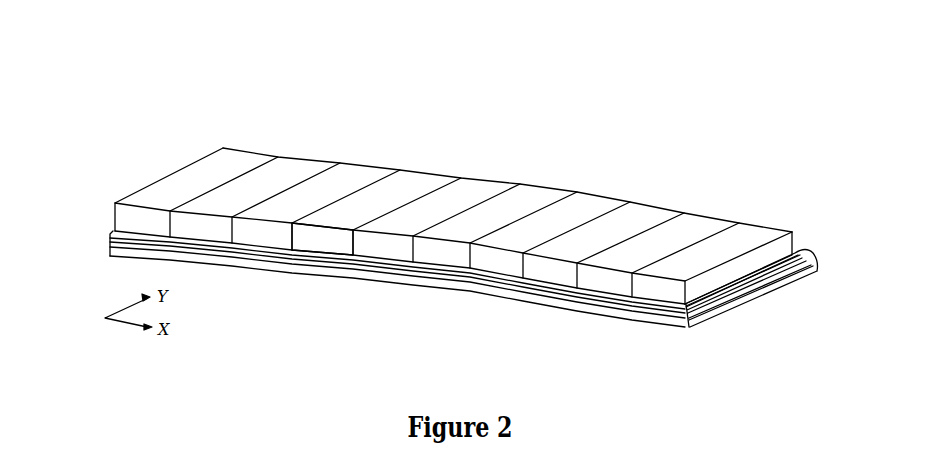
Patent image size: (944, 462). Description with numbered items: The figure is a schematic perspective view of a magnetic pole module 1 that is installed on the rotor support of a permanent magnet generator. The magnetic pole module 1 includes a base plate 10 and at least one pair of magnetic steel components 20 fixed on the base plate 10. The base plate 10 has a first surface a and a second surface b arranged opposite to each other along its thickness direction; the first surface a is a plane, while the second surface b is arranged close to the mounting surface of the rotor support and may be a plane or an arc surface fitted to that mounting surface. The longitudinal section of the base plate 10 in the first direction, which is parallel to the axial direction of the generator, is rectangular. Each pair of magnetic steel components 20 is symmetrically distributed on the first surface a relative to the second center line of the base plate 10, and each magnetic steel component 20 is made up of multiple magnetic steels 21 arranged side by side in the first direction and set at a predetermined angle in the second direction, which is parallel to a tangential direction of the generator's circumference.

The magnetic pole module 1 is at (468, 63).
The magnetic steel component 20 is at (472, 183).
The magnetic steel 21 is at (337, 242).
The base plate 10 is at (703, 307).
The first surface a is at (780, 257).
The second surface b is at (760, 290).